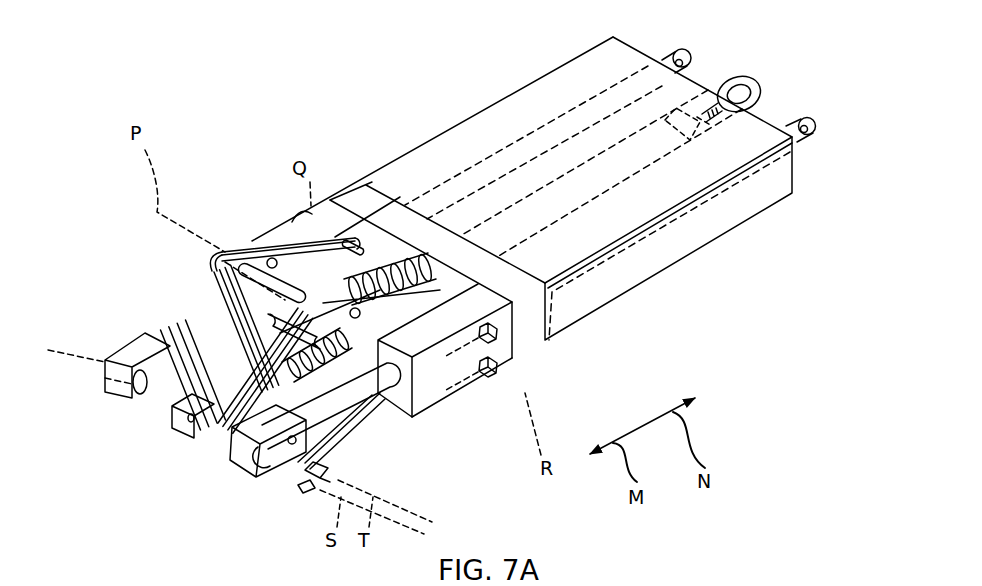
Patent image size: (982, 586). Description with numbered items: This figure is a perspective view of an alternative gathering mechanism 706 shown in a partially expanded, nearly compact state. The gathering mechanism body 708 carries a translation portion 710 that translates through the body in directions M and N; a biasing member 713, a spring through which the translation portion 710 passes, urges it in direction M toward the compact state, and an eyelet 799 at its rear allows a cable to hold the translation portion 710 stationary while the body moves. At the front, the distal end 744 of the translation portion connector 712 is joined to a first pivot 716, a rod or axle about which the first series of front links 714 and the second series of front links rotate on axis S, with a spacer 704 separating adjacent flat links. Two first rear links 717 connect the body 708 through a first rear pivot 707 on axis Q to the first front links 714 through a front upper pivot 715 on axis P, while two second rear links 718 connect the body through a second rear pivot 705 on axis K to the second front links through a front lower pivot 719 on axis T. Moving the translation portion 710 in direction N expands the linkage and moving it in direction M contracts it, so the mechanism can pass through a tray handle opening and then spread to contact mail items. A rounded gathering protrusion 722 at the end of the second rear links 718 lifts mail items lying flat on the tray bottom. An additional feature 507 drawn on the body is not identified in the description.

The housing edge flange 507 is at (702, 183).
The spacer 704 is at (197, 422).
The second rear pivot 705 is at (498, 368).
The gathering mechanism 706 is at (110, 203).
The first rear pivot 707 is at (498, 336).
The gathering mechanism body 708 is at (743, 215).
The translation portion 710 is at (650, 150).
The translation portion connector 712 is at (197, 417).
The biasing member 713 is at (377, 287).
The first series of front links 714 is at (225, 385).
The front upper pivot 715 is at (224, 246).
The first pivot 716 is at (265, 476).
The first rear links 717 is at (355, 313).
The second rear links 718 is at (370, 420).
The front lower pivot 719 is at (343, 470).
The gathering protrusion 722 is at (314, 480).
The distal end 744 is at (147, 437).
The eyelet 799 is at (732, 85).